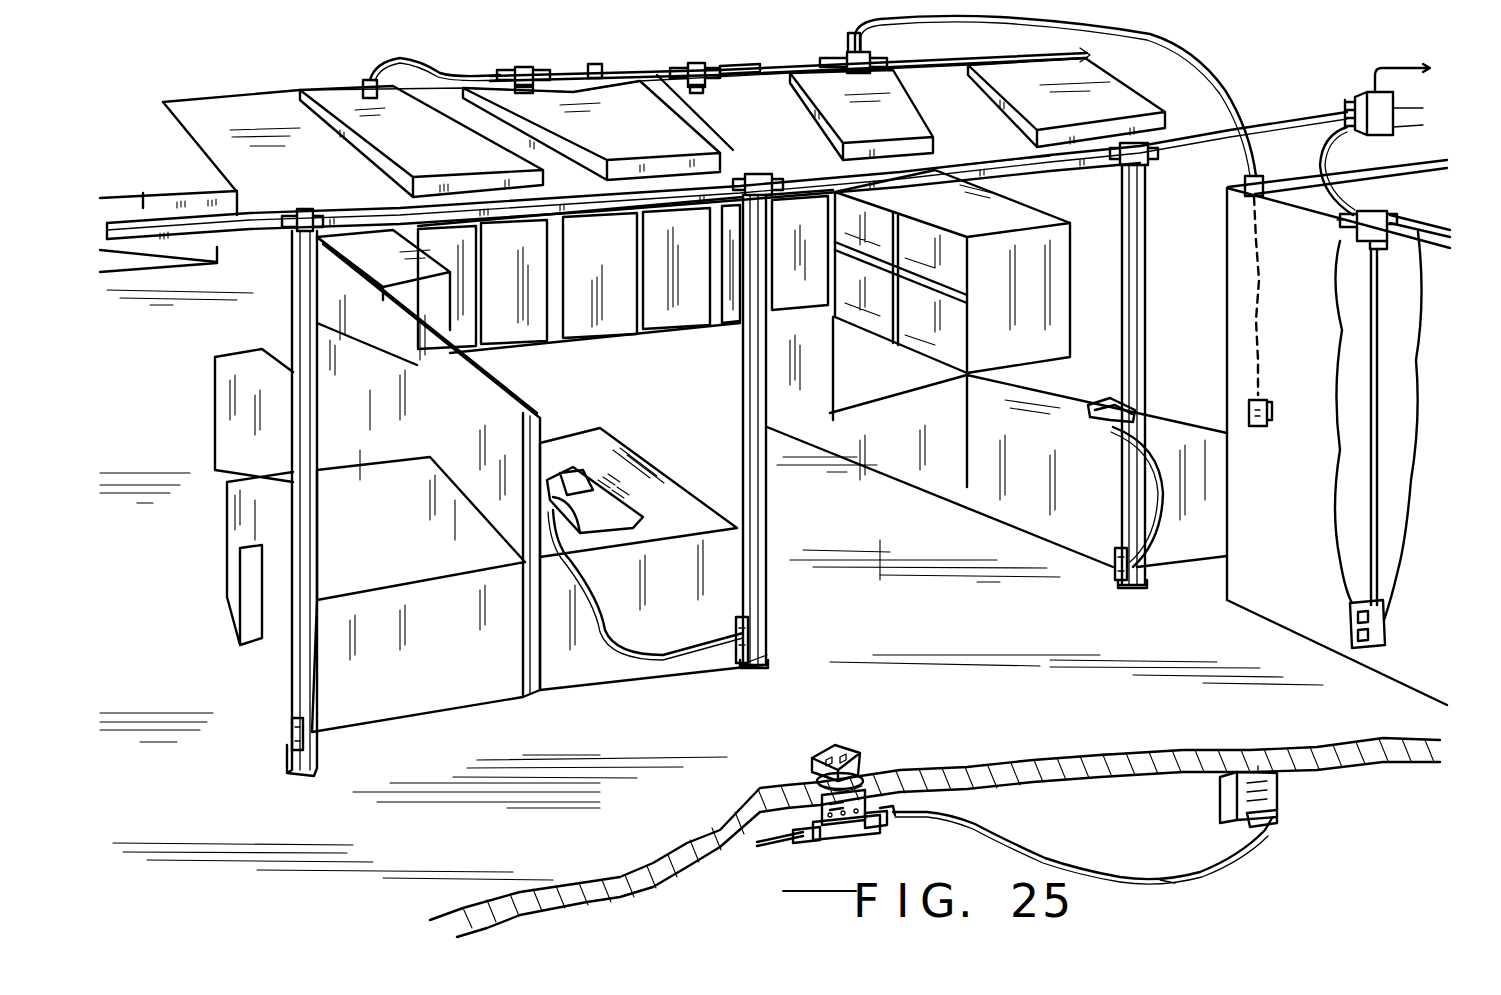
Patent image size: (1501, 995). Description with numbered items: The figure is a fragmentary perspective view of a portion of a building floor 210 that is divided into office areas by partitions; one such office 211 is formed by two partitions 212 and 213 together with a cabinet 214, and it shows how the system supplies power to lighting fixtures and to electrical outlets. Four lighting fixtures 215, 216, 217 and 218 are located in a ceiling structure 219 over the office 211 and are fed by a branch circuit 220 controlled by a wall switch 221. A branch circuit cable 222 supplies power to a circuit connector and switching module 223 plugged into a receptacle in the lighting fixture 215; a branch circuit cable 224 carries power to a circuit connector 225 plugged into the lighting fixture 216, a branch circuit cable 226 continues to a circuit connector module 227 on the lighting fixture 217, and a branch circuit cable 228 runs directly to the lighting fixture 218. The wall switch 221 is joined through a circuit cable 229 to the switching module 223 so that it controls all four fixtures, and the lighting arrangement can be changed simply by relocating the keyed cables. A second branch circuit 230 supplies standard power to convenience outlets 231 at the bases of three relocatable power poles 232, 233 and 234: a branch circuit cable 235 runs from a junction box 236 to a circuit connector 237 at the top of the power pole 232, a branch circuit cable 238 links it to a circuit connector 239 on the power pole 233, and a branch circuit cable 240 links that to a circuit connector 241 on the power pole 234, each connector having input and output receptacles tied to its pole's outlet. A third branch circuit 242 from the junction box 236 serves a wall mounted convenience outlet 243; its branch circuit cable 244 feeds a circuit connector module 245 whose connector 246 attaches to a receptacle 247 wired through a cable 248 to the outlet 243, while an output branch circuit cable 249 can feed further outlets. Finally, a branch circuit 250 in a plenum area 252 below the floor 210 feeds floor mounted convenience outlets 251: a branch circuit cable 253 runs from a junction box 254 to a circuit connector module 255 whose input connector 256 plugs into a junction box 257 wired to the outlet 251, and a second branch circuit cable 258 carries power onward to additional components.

The building floor 210 is at (1318, 773).
The office 211 is at (850, 580).
The partition 212 is at (517, 393).
The partition 213 is at (680, 443).
The cabinet 214 is at (947, 460).
The lighting fixture 215 is at (1053, 133).
The lighting fixture 216 is at (748, 121).
The lighting fixture 217 is at (627, 135).
The lighting fixture 218 is at (450, 145).
The ceiling structure 219 is at (237, 108).
The branch circuit 220 is at (760, 69).
The wall switch 221 is at (1257, 427).
The branch circuit cable 222 is at (948, 60).
The circuit connector and switching module 223 is at (868, 52).
The branch circuit cable 224 is at (737, 64).
The circuit connector 225 is at (684, 63).
The branch circuit cable 226 is at (596, 63).
The circuit connector module 227 is at (520, 66).
The branch circuit cable 228 is at (424, 70).
The circuit cable 229 is at (1177, 47).
The branch circuit 230 is at (977, 162).
The convenience outlet 231 is at (303, 748).
The power pole 232 is at (1147, 320).
The power pole 233 is at (803, 370).
The power pole 234 is at (318, 530).
The branch circuit cable 235 is at (1256, 112).
The junction box 236 is at (1390, 90).
The circuit connector 237 is at (1138, 142).
The branch circuit cable 238 is at (910, 170).
The circuit connector 239 is at (752, 175).
The branch circuit cable 240 is at (577, 200).
The circuit connector 241 is at (308, 210).
The branch circuit 242 is at (1333, 161).
The convenience outlet 243 is at (1350, 637).
The branch circuit cable 244 is at (1345, 104).
The circuit connector module 245 is at (1375, 210).
The connector 246 is at (1345, 232).
The receptacle 247 is at (1340, 283).
The cable 248 is at (1370, 342).
The branch circuit cable 249 is at (1425, 226).
The branch circuit 250 is at (1167, 882).
The floor mounted convenience outlet 251 is at (865, 755).
The plenum area 252 is at (1087, 783).
The branch circuit cable 253 is at (1050, 853).
The junction box 254 is at (1223, 795).
The circuit connector module 255 is at (843, 832).
The input connector 256 is at (908, 822).
The junction box 257 is at (862, 768).
The branch circuit cable 258 is at (783, 847).